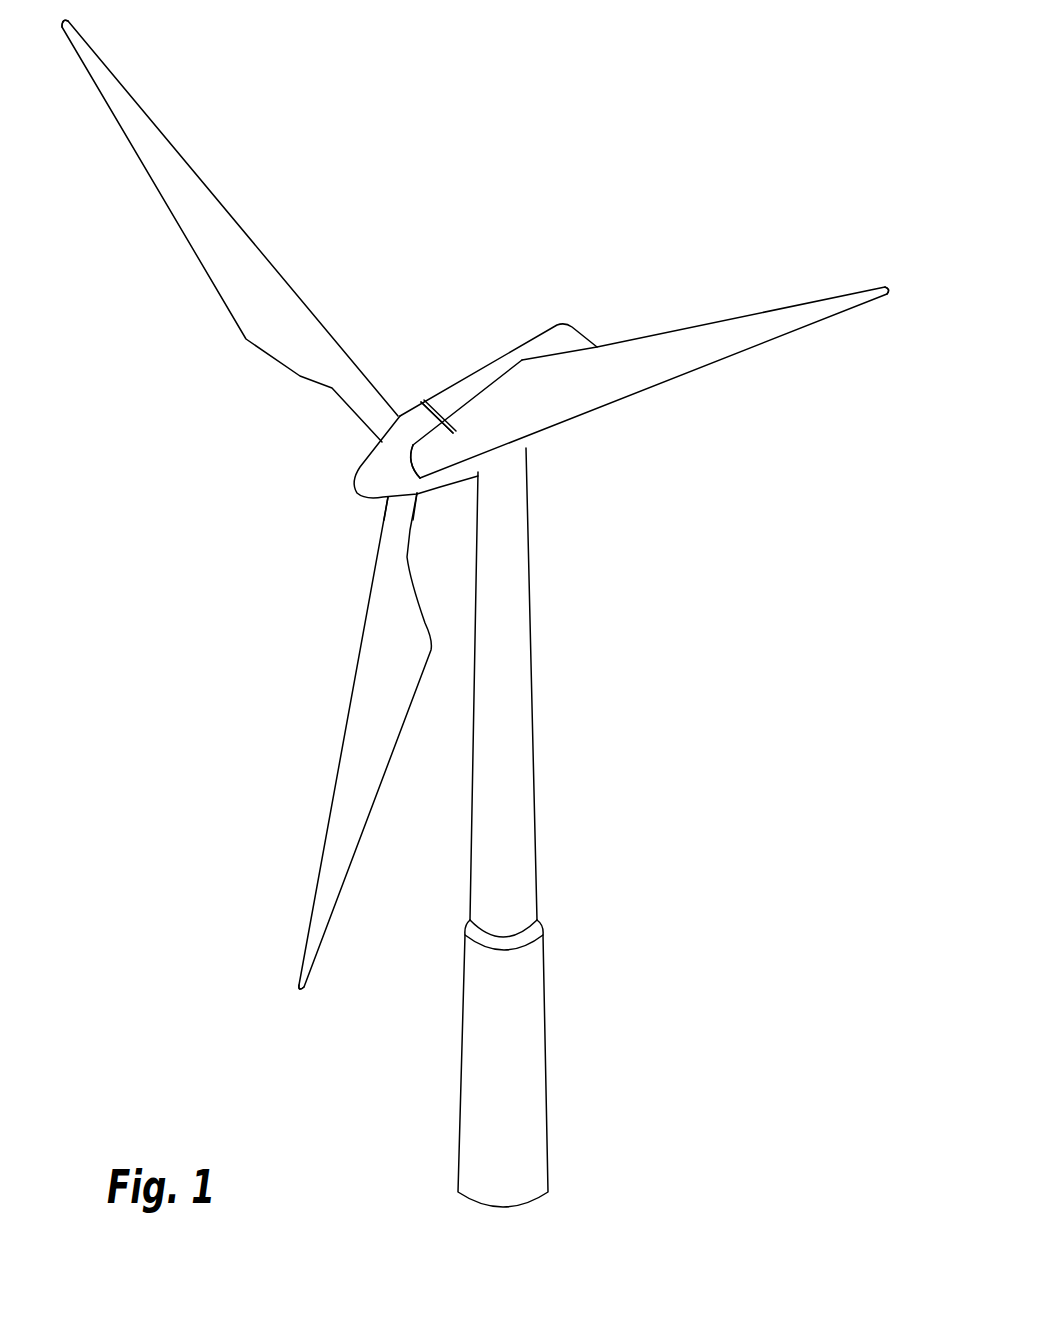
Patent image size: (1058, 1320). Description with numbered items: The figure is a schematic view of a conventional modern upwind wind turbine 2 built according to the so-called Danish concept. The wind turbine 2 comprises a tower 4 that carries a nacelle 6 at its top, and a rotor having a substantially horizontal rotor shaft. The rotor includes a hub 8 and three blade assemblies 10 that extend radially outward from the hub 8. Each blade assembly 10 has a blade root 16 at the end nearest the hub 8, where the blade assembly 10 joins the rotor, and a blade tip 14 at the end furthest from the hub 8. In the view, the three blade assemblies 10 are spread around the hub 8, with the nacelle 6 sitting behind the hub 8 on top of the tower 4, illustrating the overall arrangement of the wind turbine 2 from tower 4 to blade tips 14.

The wind turbine 2 is at (642, 767).
The tower 4 is at (522, 688).
The nacelle 6 is at (452, 383).
The hub 8 is at (373, 472).
The blade assembly 10 is at (262, 320).
The blade tip 14 is at (112, 81).
The blade root 16 is at (385, 430).